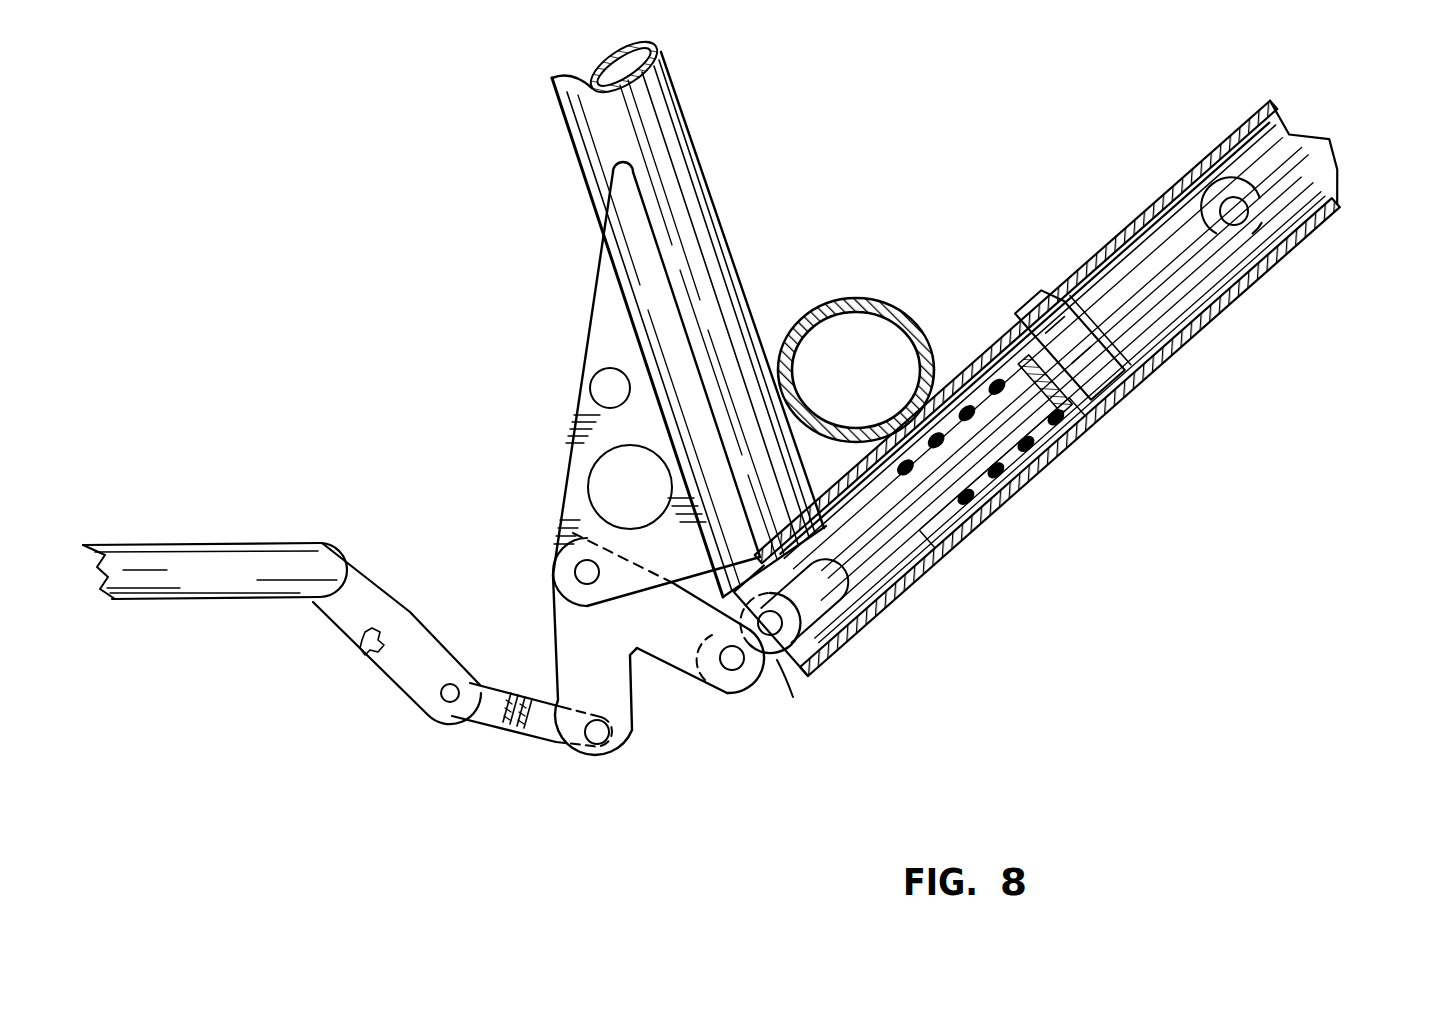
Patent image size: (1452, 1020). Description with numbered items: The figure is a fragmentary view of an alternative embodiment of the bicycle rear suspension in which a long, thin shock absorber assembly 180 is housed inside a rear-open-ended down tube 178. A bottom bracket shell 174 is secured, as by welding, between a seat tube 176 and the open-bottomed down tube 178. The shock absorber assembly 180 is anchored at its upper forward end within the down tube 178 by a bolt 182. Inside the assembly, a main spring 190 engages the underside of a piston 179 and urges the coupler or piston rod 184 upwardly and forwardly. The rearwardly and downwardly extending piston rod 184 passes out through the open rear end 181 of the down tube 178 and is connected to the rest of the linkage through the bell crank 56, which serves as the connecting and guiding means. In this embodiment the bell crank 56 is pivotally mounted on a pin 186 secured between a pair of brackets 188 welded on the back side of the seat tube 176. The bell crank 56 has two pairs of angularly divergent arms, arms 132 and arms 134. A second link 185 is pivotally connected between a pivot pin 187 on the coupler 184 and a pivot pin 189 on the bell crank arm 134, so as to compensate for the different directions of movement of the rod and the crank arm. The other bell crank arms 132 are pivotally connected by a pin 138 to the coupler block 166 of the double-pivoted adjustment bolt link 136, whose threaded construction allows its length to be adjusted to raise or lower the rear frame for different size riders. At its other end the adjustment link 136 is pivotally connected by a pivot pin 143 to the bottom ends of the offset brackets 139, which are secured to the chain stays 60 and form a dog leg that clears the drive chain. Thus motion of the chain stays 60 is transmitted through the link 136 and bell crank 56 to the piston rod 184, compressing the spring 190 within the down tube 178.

The chain stays 60 is at (232, 588).
The offset brackets 139 is at (357, 648).
The pivot pin 143 is at (445, 694).
The double-pivoted adjustment bolt link 136 is at (505, 738).
The coupler block 166 is at (527, 737).
The pin 138 is at (600, 768).
The bell crank arms 132 is at (618, 655).
The bell crank 56 is at (638, 656).
The brackets 188 is at (605, 320).
The pin 186 is at (580, 572).
The bell crank arms 134 is at (702, 623).
The pivot pin 189 is at (732, 672).
The seat tube 176 is at (650, 160).
The bottom bracket shell 174 is at (888, 297).
The down tube 178 is at (1215, 145).
The coupler or piston rod 184 is at (997, 462).
The bolt 182 is at (1325, 173).
The shock absorber assembly 180 is at (1065, 460).
The piston 179 is at (1090, 415).
The main spring 190 is at (990, 530).
The pivot pin 187 is at (770, 611).
The second link 185 is at (737, 684).
The open rear end 181 is at (797, 675).